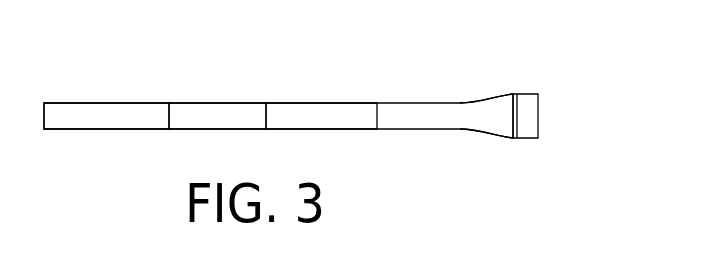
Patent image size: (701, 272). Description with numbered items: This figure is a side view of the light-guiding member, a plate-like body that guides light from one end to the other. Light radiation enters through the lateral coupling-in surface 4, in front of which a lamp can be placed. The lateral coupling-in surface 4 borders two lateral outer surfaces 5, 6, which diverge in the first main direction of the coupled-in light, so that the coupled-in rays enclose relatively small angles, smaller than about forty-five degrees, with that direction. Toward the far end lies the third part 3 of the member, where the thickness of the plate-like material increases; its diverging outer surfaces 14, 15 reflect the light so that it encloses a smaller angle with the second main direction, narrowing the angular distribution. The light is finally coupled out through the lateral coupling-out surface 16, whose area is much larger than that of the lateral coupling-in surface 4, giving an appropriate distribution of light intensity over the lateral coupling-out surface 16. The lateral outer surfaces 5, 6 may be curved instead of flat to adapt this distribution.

The third part 3 is at (458, 81).
The lateral coupling-in surface 4 is at (200, 116).
The lateral outer surface 5 is at (98, 116).
The lateral outer surface 6 is at (345, 117).
The diverging outer surface 14 is at (490, 95).
The diverging outer surface 15 is at (481, 134).
The lateral coupling-out surface 16 is at (538, 104).